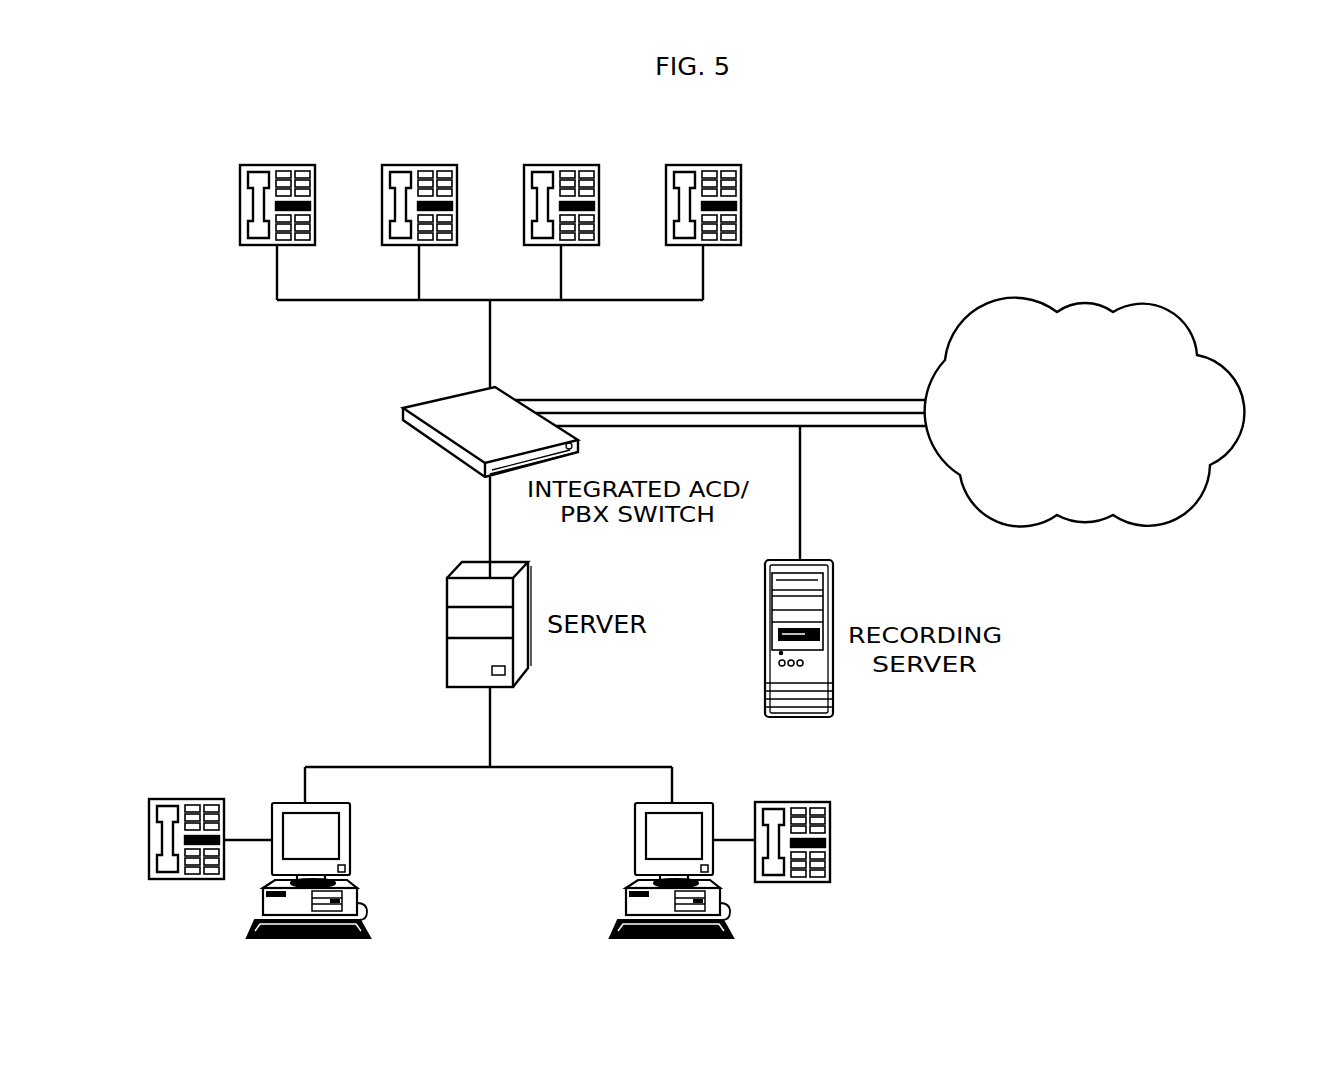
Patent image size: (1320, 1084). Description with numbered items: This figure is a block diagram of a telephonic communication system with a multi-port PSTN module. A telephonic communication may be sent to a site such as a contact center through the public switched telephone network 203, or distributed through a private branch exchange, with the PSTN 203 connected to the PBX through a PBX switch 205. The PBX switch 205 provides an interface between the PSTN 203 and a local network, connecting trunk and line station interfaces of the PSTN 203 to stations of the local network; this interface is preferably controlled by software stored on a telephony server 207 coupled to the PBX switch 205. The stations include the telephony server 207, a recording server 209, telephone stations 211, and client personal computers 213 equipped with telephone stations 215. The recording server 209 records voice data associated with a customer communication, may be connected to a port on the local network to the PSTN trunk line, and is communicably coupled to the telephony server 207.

The public switched telephone network 203 is at (1022, 304).
The PBX switch 205 is at (470, 393).
The telephony server 207 is at (476, 560).
The recording server 209 is at (793, 559).
The telephone stations 211 is at (701, 164).
The client personal computers 213 is at (654, 802).
The telephone stations 215 is at (794, 802).